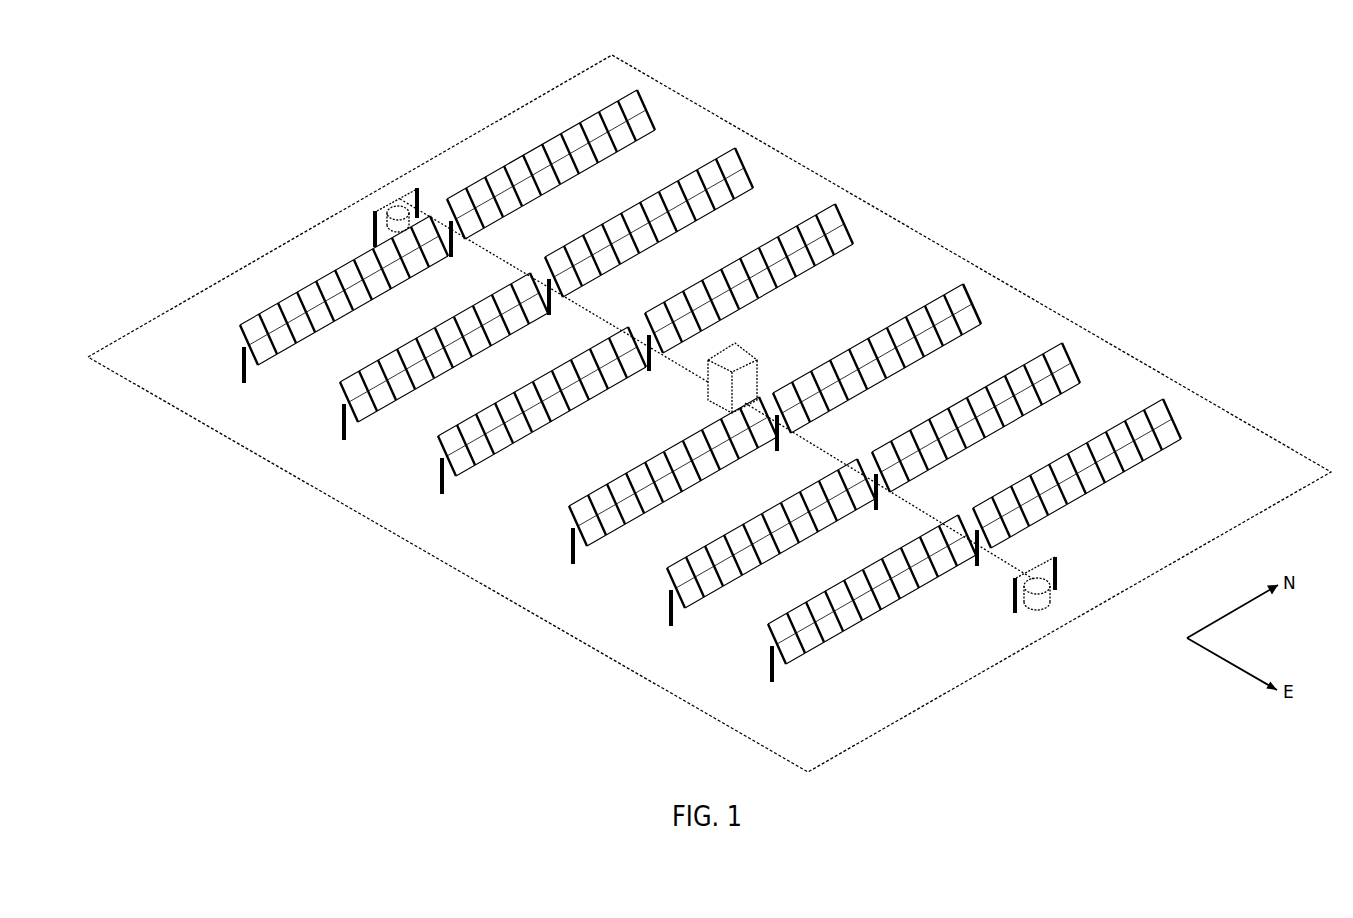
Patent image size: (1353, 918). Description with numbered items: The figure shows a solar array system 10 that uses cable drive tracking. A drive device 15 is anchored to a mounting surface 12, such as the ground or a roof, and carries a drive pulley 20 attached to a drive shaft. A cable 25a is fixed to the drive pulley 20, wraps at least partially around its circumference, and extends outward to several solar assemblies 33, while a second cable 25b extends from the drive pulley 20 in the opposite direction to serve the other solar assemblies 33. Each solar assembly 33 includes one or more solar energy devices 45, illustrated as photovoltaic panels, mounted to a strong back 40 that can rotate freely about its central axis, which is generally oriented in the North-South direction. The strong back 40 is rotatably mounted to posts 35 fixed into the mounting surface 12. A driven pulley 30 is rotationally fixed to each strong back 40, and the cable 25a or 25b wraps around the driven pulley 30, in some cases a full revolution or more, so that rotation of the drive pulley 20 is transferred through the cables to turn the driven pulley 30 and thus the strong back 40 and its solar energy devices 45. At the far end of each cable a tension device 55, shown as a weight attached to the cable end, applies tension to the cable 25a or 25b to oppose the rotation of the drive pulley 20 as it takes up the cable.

The solar array system 10 is at (964, 200).
The mounting surface 12 is at (354, 487).
The drive device 15 is at (720, 363).
The drive pulley 20 is at (708, 382).
The cable 25a is at (918, 502).
The cable 25b is at (592, 311).
The driven pulley 30 is at (775, 420).
The solar assembly 33 is at (240, 304).
The post 35 is at (573, 556).
The strong back 40 is at (890, 353).
The solar energy device 45 is at (960, 293).
The tension device 55 is at (388, 218).